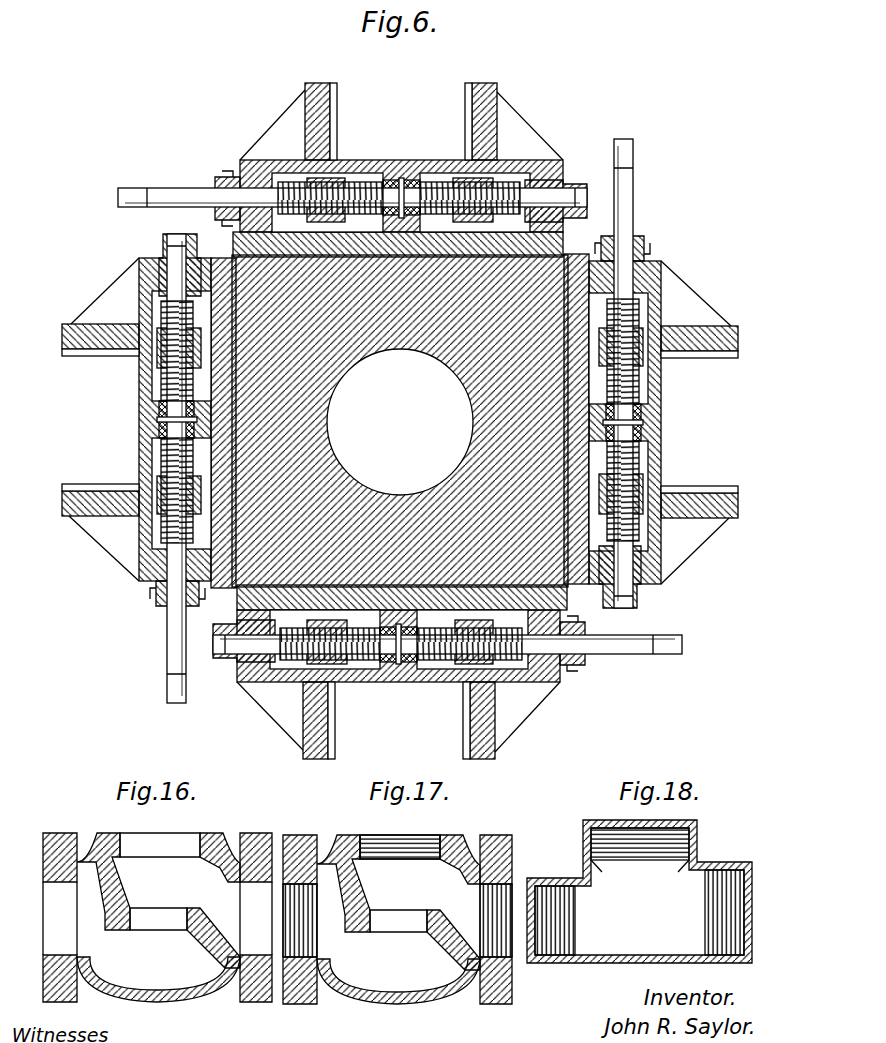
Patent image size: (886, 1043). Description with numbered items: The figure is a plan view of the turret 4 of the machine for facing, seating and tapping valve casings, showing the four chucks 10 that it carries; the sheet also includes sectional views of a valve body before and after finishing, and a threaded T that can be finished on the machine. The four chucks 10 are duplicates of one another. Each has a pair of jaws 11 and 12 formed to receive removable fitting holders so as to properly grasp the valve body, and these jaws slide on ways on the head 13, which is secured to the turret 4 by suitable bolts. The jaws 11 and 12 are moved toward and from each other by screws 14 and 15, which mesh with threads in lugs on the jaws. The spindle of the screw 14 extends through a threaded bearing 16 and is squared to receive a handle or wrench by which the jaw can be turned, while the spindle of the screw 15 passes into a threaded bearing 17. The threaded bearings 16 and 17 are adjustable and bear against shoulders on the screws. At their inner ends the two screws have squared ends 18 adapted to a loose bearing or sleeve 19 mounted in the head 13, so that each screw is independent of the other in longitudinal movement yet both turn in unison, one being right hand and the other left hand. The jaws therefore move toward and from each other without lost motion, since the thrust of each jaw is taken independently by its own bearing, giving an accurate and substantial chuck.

The turret 4 is at (400, 422).
The chuck 10 is at (399, 416).
The jaw 11 is at (400, 421).
The jaw 12 is at (400, 421).
The head 13 is at (406, 421).
The screw 14 is at (407, 421).
The screw 15 is at (400, 416).
The threaded bearing 16 is at (394, 406).
The threaded bearing 17 is at (402, 427).
The squared end 18 is at (395, 428).
The loose bearing or sleeve 19 is at (392, 408).